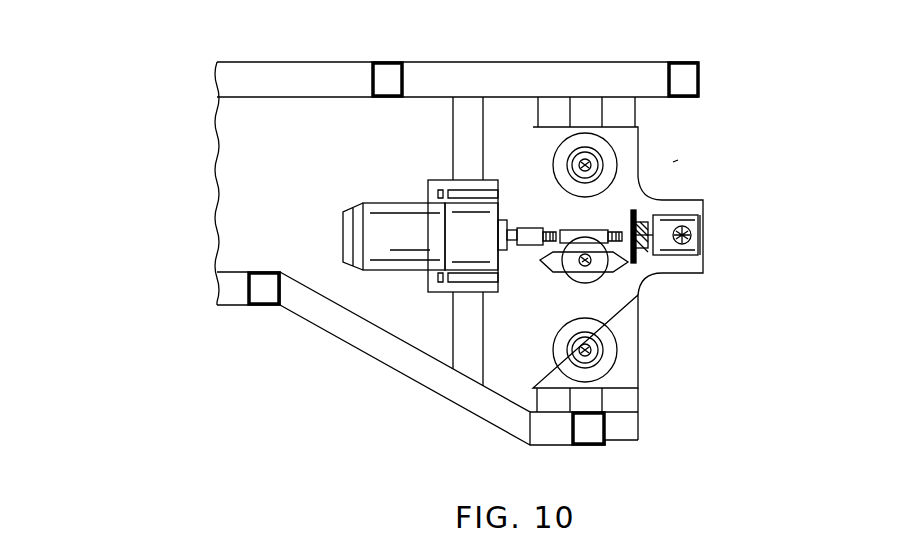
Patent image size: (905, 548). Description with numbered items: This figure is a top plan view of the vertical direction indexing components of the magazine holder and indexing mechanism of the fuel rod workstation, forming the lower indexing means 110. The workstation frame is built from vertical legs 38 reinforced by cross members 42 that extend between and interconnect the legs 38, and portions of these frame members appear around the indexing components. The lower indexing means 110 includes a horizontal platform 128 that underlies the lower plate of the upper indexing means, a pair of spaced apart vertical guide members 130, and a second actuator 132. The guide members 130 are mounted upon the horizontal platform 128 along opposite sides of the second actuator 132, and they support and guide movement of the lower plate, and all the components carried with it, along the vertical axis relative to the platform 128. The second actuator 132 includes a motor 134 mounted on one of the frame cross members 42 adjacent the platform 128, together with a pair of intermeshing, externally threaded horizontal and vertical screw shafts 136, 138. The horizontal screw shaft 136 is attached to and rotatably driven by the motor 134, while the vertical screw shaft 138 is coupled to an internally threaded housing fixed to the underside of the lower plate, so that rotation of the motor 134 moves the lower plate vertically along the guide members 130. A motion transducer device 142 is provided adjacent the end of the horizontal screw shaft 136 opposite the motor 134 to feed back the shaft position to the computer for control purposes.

The vertical legs 38 is at (393, 62).
The cross members 42 is at (527, 62).
The lower indexing means 110 is at (672, 163).
The horizontal platform 128 is at (638, 327).
The vertical guide members 130 is at (616, 146).
The second actuator 132 is at (530, 270).
The motor 134 is at (426, 244).
The horizontal screw shaft 136 is at (553, 228).
The vertical screw shaft 138 is at (585, 260).
The motion transducer device 142 is at (678, 218).